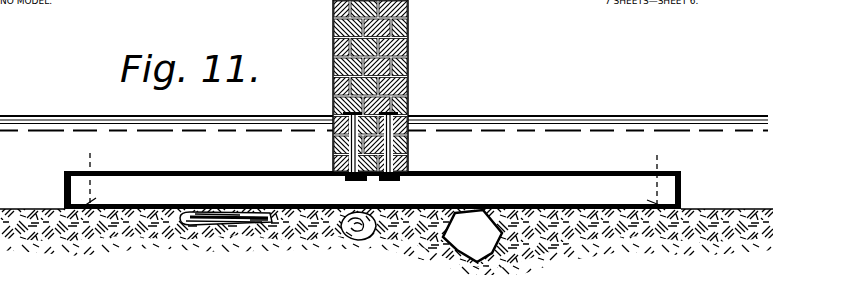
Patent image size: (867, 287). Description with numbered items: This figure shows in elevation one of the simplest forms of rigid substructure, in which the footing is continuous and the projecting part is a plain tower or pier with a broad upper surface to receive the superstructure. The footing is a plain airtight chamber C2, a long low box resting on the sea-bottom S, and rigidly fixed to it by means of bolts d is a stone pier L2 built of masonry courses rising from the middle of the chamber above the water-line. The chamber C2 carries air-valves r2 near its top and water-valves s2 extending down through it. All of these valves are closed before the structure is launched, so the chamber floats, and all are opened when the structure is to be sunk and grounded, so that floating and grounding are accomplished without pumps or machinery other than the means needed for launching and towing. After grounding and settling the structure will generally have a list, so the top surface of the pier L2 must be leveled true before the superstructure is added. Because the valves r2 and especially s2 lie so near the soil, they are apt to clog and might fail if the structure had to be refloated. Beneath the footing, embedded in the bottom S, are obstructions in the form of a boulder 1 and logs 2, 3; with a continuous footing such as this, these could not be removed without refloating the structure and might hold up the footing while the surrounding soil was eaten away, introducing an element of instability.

The stone pier L2 is at (405, 70).
The bolts d is at (351, 147).
The airtight chamber C2 is at (372, 190).
The water-valves s2 is at (678, 157).
The air-valves r2 is at (117, 171).
The sea bottom / sand S is at (115, 237).
The boulder 1 is at (472, 236).
The log 2 is at (361, 239).
The log 3 is at (212, 230).